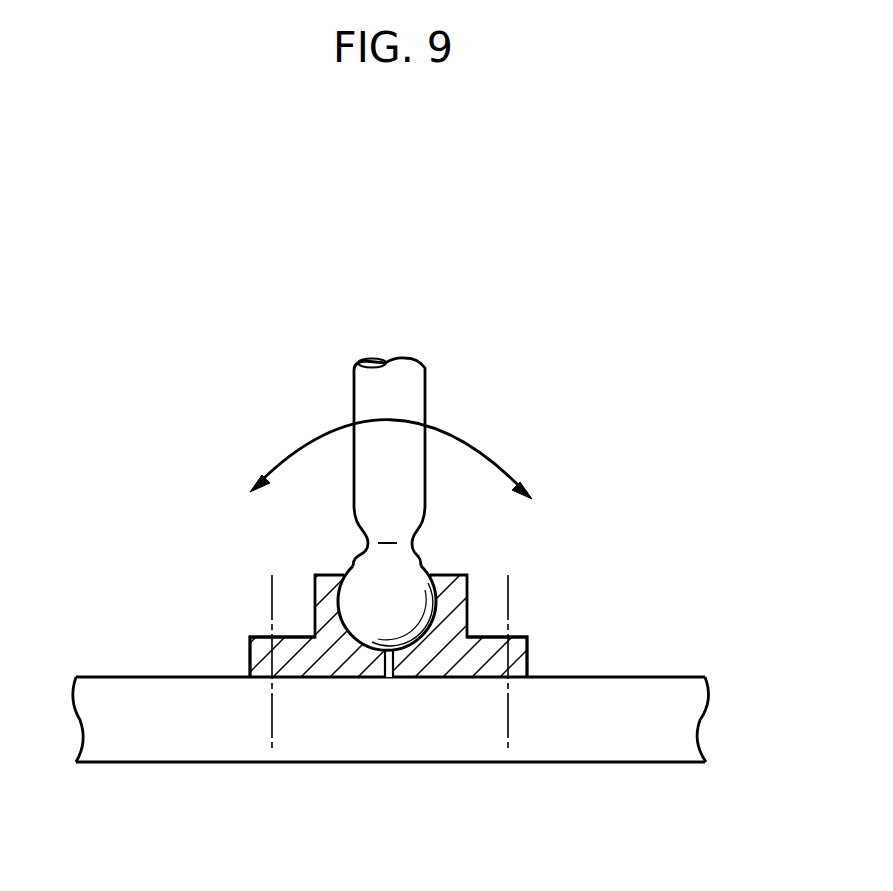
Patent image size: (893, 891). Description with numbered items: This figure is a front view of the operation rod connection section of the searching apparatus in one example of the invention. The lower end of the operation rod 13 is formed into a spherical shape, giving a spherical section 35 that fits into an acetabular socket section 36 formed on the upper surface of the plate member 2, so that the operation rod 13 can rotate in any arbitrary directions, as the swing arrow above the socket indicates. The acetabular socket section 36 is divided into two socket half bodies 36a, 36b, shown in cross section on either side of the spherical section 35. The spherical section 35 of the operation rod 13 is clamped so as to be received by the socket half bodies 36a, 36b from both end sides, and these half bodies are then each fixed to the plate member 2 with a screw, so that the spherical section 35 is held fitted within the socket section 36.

The operation rod 13 is at (370, 382).
The spherical section 35 is at (390, 608).
The acetabular socket section 36 is at (468, 582).
The socket half body 36a is at (525, 635).
The socket half body 36b is at (262, 648).
The plate member 2 is at (602, 755).